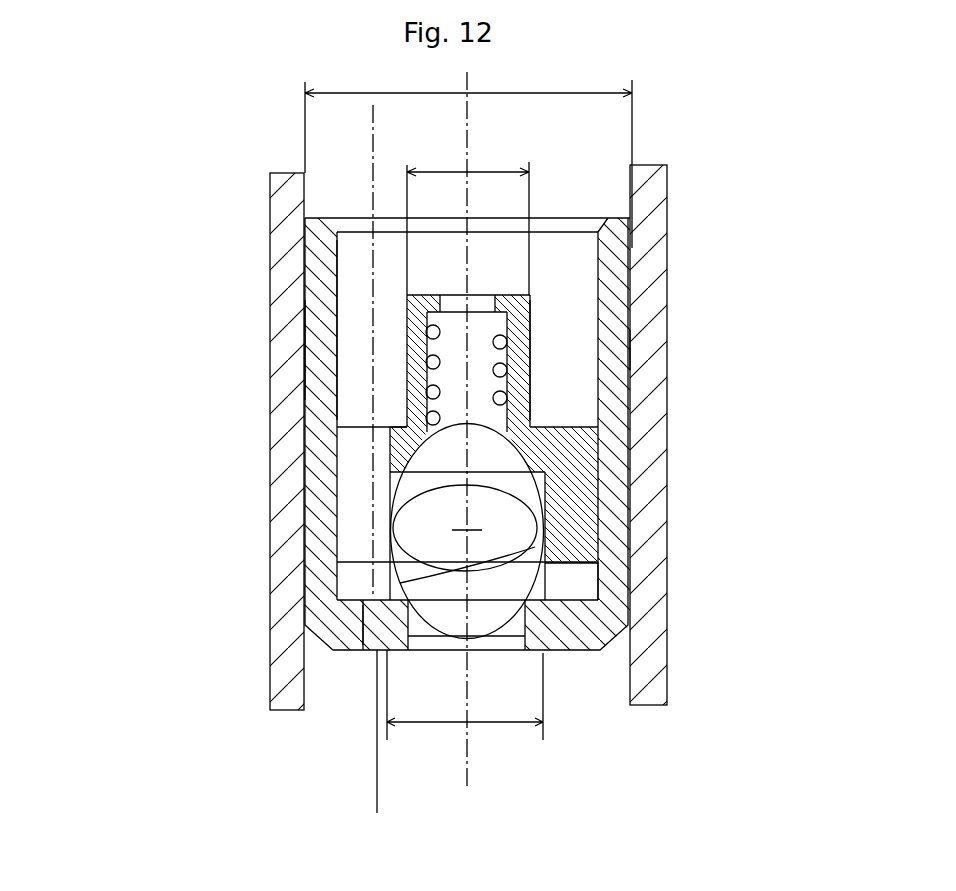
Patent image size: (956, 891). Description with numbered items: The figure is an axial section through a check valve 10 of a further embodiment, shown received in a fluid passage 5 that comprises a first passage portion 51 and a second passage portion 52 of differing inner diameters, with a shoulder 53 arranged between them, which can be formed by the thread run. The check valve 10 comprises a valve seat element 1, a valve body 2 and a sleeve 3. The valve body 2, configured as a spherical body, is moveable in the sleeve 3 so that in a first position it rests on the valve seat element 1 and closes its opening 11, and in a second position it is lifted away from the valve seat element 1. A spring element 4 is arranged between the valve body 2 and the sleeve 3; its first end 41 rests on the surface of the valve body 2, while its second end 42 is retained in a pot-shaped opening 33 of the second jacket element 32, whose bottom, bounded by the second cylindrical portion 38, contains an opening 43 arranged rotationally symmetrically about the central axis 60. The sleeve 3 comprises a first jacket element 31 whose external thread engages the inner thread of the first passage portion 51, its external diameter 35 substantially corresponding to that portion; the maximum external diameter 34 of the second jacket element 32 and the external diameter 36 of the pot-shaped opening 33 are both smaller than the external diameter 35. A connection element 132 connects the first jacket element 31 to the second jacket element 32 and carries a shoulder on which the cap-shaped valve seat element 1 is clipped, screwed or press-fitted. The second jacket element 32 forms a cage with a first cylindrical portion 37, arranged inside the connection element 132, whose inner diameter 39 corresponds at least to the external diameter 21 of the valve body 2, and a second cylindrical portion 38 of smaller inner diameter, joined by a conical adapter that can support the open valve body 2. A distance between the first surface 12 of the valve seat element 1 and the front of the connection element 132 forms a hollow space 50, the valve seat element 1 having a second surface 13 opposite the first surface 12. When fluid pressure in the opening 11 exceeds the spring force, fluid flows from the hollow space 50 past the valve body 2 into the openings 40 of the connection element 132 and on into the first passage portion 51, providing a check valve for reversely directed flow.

The valve seat element 1 is at (588, 650).
The valve body 2 is at (481, 629).
The sleeve 3 is at (306, 348).
The spring element 4 is at (505, 371).
The fluid passage 5 is at (602, 188).
The check valve 10 is at (215, 132).
The opening 11 is at (408, 650).
The first surface 12 is at (360, 651).
The second surface 13 is at (385, 756).
The external diameter of the valve body 21 is at (392, 586).
The first jacket element 31 is at (335, 256).
The second jacket element 32 is at (407, 302).
The pot-shaped opening 33 is at (532, 302).
The maximum external diameter of the second jacket element 34 is at (477, 170).
The external diameter of the first jacket element 35 is at (327, 92).
The external diameter of the pot-shaped opening 36 is at (468, 228).
The first cylindrical portion 37 is at (600, 556).
The second cylindrical portion 38 is at (527, 330).
The inner diameter of the first cylindrical portion 39 is at (507, 722).
The openings 40 is at (372, 500).
The first end of the spring element 41 is at (400, 428).
The second end of the spring element 42 is at (412, 322).
The opening 43 is at (480, 293).
The hollow space 50 is at (330, 620).
The first passage portion 51 is at (307, 203).
The second passage portion 52 is at (634, 660).
The shoulder 53 is at (628, 350).
The central axis 60 is at (463, 777).
The connection element 132 is at (577, 478).